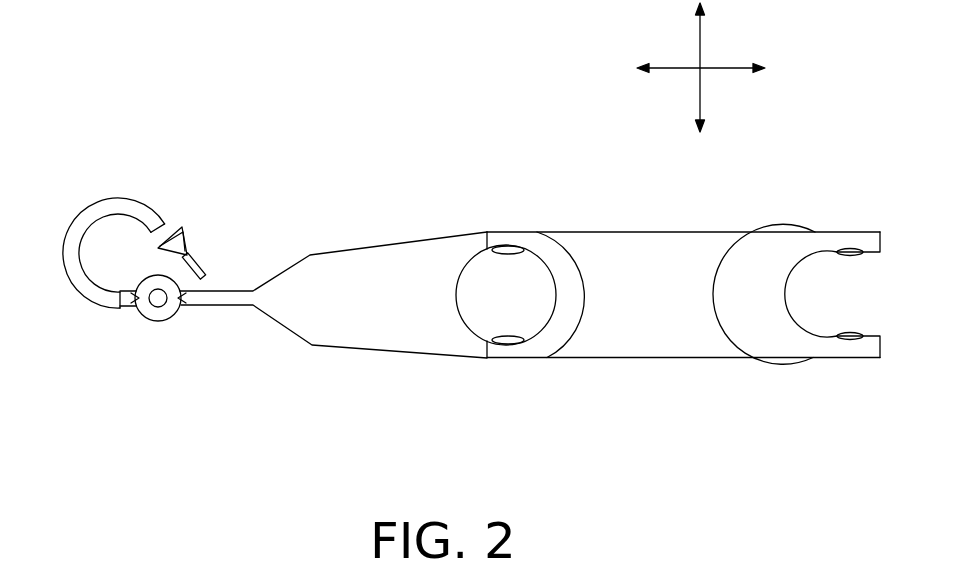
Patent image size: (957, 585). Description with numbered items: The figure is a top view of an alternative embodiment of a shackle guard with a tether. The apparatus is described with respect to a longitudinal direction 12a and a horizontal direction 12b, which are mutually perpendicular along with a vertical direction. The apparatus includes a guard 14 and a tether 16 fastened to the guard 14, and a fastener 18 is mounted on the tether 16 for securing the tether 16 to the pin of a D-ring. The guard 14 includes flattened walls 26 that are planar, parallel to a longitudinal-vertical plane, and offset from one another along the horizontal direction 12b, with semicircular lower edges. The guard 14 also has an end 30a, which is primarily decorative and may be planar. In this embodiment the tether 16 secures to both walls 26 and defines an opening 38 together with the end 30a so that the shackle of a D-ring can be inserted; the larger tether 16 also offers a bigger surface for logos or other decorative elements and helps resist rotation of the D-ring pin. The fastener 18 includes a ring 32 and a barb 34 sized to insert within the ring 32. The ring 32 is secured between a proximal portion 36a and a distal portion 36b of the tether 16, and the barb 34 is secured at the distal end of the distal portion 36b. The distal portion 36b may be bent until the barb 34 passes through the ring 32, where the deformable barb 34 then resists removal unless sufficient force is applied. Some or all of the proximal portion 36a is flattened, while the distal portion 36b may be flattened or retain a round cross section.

The longitudinal direction 12a is at (742, 68).
The horizontal direction 12b is at (700, 42).
The guard 14 is at (651, 288).
The tether 16 is at (333, 275).
The fastener 18 is at (134, 250).
The flattened walls 26 is at (580, 232).
The end 30a is at (540, 240).
The ring 32 is at (164, 313).
The barb 34 is at (185, 234).
The proximal portion 36a is at (350, 316).
The distal portion 36b is at (77, 223).
The opening 38 is at (487, 309).